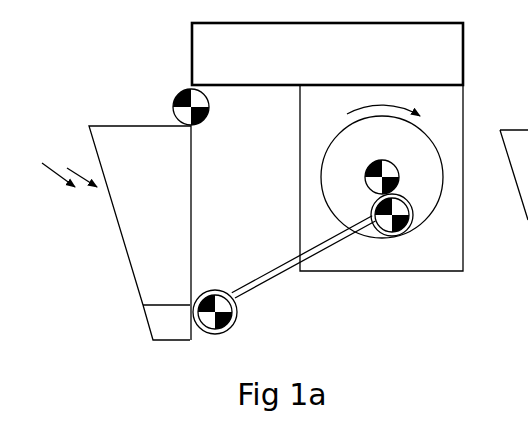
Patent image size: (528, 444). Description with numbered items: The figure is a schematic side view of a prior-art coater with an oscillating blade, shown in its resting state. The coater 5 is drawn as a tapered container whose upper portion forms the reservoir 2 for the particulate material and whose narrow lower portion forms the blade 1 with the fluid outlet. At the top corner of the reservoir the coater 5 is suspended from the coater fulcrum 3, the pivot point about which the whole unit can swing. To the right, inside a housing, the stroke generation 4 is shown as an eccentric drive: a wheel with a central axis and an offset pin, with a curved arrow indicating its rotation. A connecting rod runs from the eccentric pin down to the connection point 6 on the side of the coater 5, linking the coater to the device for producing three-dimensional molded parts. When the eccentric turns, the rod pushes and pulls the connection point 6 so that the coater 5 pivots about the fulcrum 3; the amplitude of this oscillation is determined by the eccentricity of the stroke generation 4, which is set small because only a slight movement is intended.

The blade 1 is at (158, 323).
The reservoir 2 is at (138, 242).
The coater fulcrum 3 is at (180, 102).
The stroke generation 4 is at (457, 113).
The coater 5 is at (59, 162).
The connection point 6 is at (240, 313).